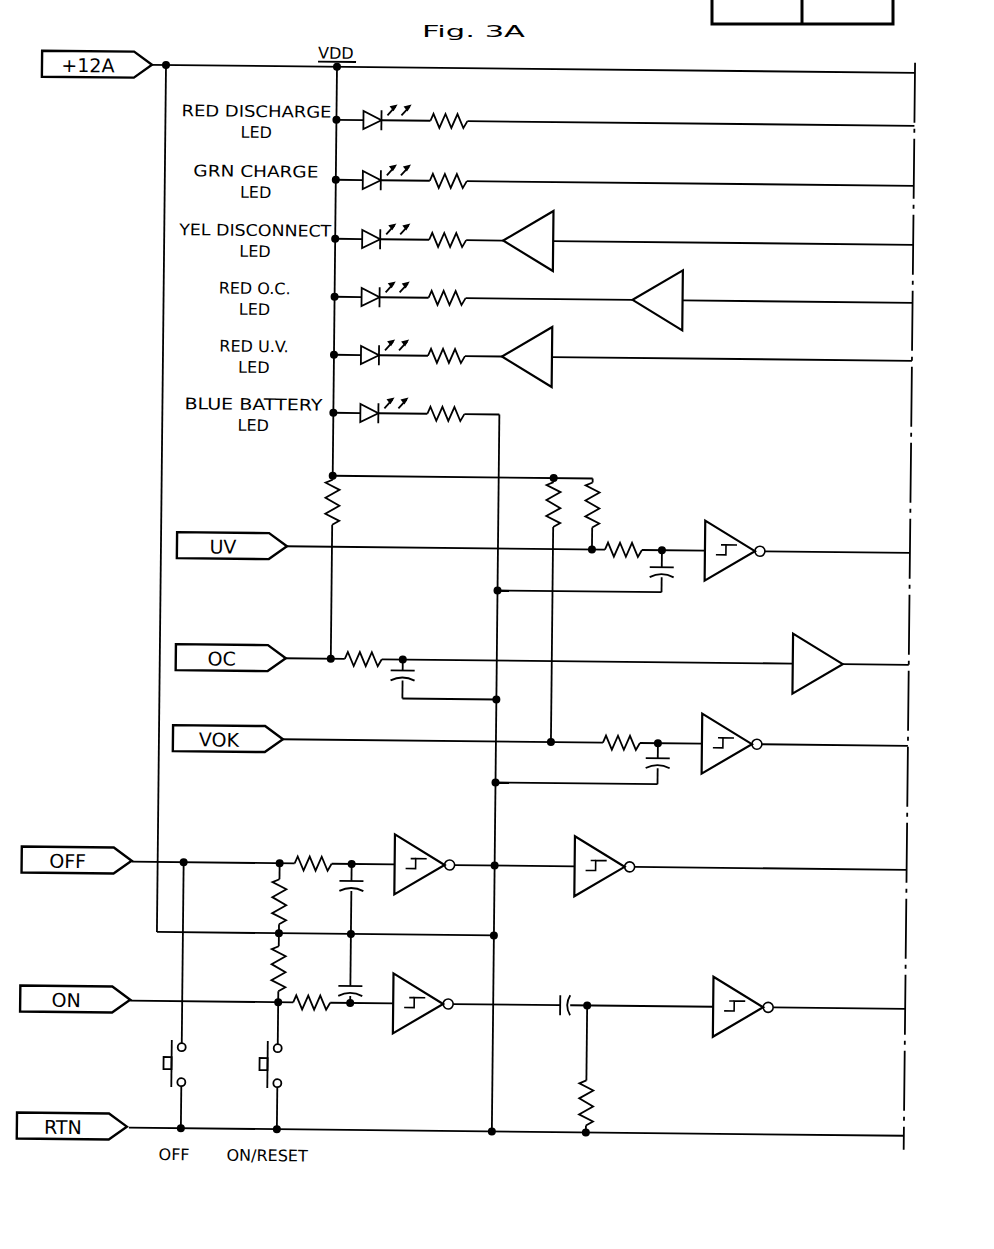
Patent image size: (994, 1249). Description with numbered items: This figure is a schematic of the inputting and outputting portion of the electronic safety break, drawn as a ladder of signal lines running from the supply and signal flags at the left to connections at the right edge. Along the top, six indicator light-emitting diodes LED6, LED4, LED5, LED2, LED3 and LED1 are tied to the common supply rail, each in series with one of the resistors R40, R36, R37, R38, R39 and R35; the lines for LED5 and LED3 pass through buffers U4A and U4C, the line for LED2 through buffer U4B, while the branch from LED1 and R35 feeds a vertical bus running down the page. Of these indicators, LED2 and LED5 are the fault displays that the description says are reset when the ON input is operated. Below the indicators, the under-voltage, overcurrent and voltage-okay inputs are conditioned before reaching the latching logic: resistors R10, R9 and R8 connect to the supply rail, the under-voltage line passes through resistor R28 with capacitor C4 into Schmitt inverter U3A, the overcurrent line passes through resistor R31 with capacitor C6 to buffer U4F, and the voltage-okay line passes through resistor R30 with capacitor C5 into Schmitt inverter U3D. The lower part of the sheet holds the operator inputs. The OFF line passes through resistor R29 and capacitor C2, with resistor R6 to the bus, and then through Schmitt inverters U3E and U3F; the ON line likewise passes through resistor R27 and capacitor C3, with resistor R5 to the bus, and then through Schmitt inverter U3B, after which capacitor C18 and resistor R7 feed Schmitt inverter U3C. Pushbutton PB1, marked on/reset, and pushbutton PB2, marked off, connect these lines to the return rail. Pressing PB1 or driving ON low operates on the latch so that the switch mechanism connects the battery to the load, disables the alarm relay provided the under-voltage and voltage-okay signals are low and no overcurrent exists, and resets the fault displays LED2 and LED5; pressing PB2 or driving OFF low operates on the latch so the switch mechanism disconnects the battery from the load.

The red discharge LED LED6 is at (383, 123).
The green charge LED LED4 is at (383, 183).
The fault display LED5 is at (382, 242).
The fault display LED2 is at (381, 300).
The red under-voltage LED LED3 is at (381, 358).
The blue battery LED LED1 is at (380, 416).
The 1K resistor R40 is at (672, 124).
The 1K resistor R36 is at (672, 184).
The 1K resistor R37 is at (466, 241).
The 1K resistor R38 is at (530, 299).
The 1K resistor R39 is at (465, 358).
The 1K resistor R35 is at (463, 416).
The 4050 buffer U4A is at (708, 243).
The 4050 buffer U4B is at (772, 301).
The 4050 buffer U4C is at (707, 359).
The 4050 buffer U4F is at (850, 667).
The 10K resistor R10 is at (352, 504).
The 10K resistor R9 is at (533, 610).
The 10K resistor R8 is at (607, 513).
The 100K resistor R28 is at (650, 555).
The 100nF capacitor C4 is at (599, 586).
The 40106 Schmitt inverter U3A is at (807, 571).
The 100K resistor R31 is at (561, 664).
The 100nF capacitor C6 is at (443, 691).
The 100K resistor R30 is at (647, 748).
The 100nF capacitor C5 is at (596, 780).
The 40106 Schmitt inverter U3D is at (804, 765).
The 100K resistor R29 is at (341, 844).
The 10K resistor R6 is at (257, 898).
The 100nF capacitor C2 is at (327, 898).
The 40106 Schmitt inverter U3E is at (484, 885).
The 40106 Schmitt inverter U3F is at (740, 888).
The 10K resistor R5 is at (256, 968).
The 100nF capacitor C3 is at (326, 968).
The 100K resistor R27 is at (342, 1025).
The 40106 Schmitt inverter U3B is at (477, 1019).
The 10nF capacitor C18 is at (629, 985).
The 10K resistor R7 is at (605, 1069).
The 40106 Schmitt inverter U3C is at (808, 1026).
The pushbutton PB2 is at (193, 995).
The pushbutton PB1 is at (288, 1066).